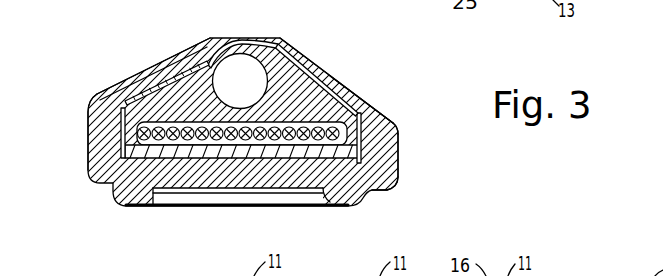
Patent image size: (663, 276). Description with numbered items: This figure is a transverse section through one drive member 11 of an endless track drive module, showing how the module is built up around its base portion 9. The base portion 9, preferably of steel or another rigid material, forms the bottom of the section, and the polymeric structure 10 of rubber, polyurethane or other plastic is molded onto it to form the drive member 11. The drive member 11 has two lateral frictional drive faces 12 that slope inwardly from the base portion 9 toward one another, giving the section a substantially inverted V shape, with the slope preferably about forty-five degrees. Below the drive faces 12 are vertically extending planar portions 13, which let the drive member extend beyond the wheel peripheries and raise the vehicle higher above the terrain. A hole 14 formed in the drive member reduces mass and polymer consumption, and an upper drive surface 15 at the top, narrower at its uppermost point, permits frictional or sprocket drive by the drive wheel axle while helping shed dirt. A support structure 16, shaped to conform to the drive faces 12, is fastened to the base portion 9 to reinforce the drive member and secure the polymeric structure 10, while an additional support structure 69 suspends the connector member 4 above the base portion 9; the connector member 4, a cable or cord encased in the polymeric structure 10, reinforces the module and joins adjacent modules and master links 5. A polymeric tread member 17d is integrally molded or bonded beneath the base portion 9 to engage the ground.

The connector member 4 is at (240, 32).
The master link 5 is at (21, 150).
The base portion 9 is at (308, 172).
The polymeric structure 10 is at (262, 39).
The drive member 11 is at (325, 45).
The drive face 12 is at (127, 84).
The vertically extending planar portion 13 is at (86, 122).
The hole 14 is at (229, 77).
The upper drive surface 15 is at (247, 43).
The support structure 16 is at (362, 92).
The additional support structure 69 is at (386, 111).
The polymeric tread member 17d is at (388, 186).